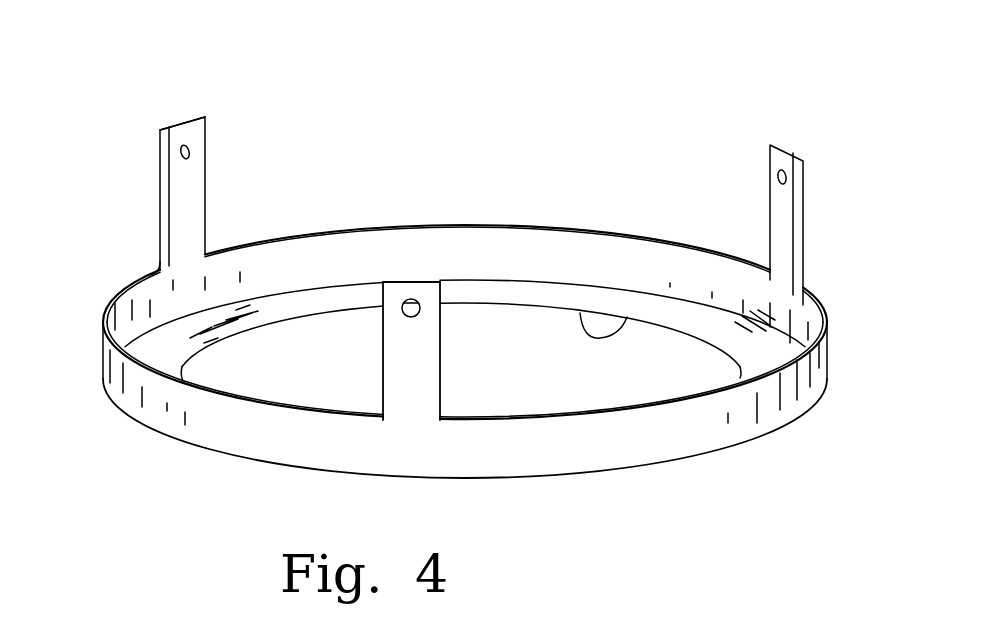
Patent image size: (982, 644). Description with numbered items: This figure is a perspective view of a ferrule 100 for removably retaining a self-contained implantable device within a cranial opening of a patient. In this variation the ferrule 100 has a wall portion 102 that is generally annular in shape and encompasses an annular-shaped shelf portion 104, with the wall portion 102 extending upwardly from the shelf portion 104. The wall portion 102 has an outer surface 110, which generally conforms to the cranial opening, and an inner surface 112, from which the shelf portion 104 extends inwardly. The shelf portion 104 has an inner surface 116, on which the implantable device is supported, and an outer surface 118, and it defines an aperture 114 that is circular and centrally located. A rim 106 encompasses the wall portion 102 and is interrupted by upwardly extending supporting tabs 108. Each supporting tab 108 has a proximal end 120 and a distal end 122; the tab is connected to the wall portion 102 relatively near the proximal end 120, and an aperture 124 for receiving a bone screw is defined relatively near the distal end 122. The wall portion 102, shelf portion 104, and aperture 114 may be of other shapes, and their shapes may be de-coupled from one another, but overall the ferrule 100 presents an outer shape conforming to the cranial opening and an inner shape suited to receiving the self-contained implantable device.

The ferrule 100 is at (643, 124).
The wall portion 102 is at (557, 440).
The shelf portion 104 is at (682, 317).
The rim 106 is at (814, 312).
The supporting tab 108 is at (160, 155).
The outer surface 110 is at (437, 457).
The inner surface 112 is at (540, 263).
The aperture 114 is at (580, 313).
The inner surface 116 is at (183, 347).
The outer surface 118 is at (297, 306).
The proximal end 120 is at (157, 266).
The distal end 122 is at (205, 120).
The aperture 124 is at (192, 153).